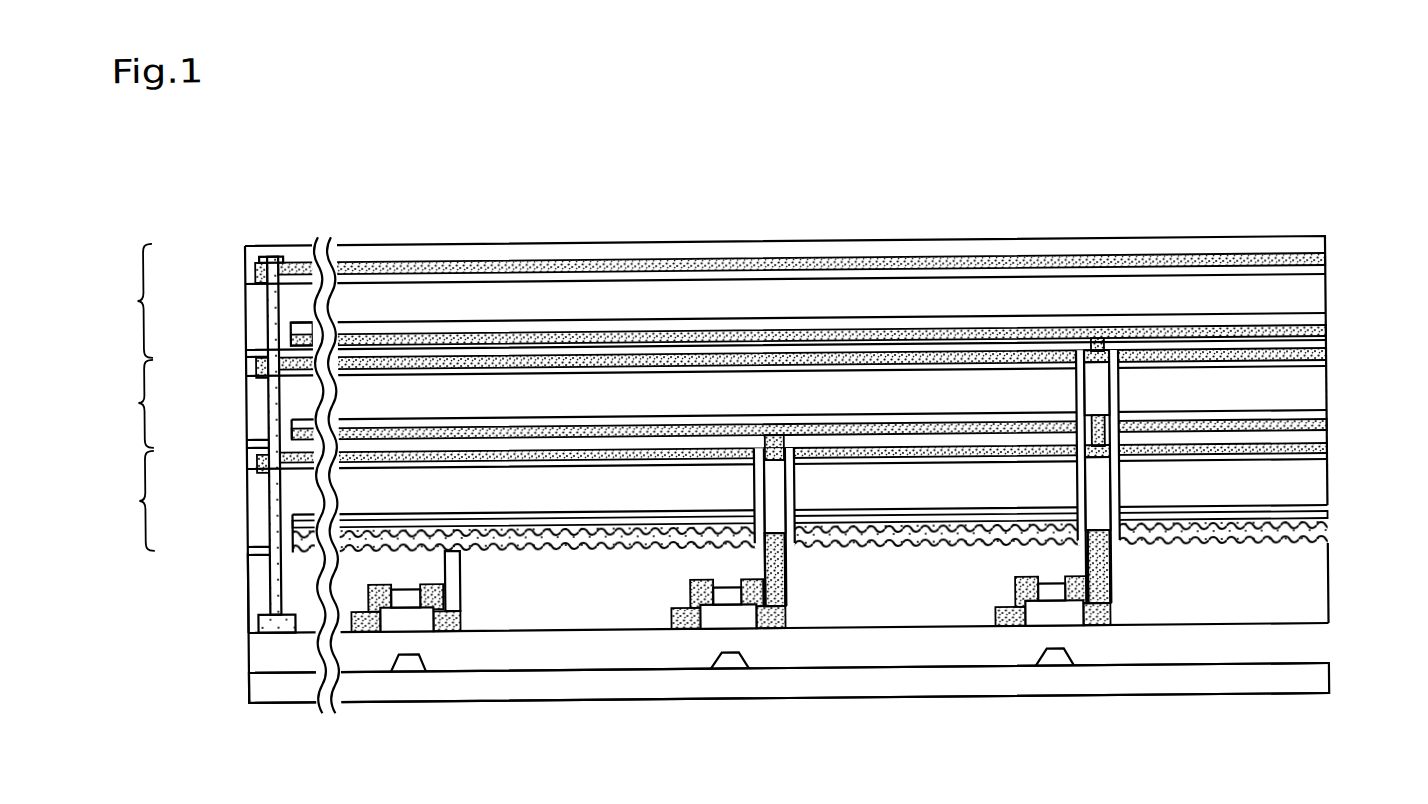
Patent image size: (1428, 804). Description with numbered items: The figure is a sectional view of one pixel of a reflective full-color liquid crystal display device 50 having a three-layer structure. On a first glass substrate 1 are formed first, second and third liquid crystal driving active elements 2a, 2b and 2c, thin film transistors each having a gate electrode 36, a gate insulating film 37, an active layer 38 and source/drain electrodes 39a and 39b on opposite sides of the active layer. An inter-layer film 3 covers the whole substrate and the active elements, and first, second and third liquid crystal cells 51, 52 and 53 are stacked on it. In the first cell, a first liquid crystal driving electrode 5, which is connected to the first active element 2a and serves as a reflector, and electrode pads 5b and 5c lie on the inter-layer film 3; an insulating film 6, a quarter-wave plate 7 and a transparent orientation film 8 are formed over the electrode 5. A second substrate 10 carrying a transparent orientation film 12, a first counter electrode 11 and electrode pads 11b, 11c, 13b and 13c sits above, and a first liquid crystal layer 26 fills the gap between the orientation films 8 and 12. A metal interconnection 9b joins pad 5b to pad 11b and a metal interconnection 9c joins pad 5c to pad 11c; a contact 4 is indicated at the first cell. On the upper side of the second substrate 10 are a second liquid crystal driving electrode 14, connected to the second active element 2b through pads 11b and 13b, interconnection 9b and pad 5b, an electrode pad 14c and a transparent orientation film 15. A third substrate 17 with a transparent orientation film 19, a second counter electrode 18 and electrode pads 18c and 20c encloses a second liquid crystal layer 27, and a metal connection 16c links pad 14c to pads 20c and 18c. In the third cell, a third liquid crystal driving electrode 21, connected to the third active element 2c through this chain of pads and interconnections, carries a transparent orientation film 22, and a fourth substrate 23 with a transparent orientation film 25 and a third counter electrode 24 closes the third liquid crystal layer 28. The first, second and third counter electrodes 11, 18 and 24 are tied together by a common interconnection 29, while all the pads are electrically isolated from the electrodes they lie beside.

The first glass substrate 1 is at (1310, 695).
The first liquid crystal driving active element 2a is at (439, 659).
The second liquid crystal driving active element 2b is at (686, 638).
The third liquid crystal driving active element 2c is at (1027, 690).
The inter-layer film 3 is at (1310, 598).
The contact hole 4 is at (460, 577).
The first liquid crystal driving electrode 5 is at (878, 548).
The electrode pad 5b is at (785, 553).
The electrode pad 5c is at (1112, 553).
The insulating film 6 is at (1325, 545).
The ¼-wave plate 7 is at (1325, 525).
The transparent orientation film 8 is at (1325, 516).
The metal interconnection 9b is at (761, 520).
The metal interconnection 9c is at (1080, 548).
The second substrate 10 is at (246, 447).
The first counter electrode 11 is at (1325, 462).
The electrode pad 11b is at (756, 462).
The electrode pad 11c is at (1118, 474).
The transparent orientation film 12 is at (255, 467).
The electrode pad 13b is at (788, 474).
The electrode pad 13c is at (1076, 476).
The second liquid crystal driving electrode 14 is at (289, 432).
The electrode pad 14c is at (1110, 418).
The transparent orientation film 15 is at (1325, 421).
The metal connection 16c is at (1082, 405).
The third substrate 17 is at (247, 354).
The second counter electrode 18 is at (1325, 363).
The electrode pad 18c is at (1099, 350).
The transparent orientation film 19 is at (1325, 374).
The electrode pad 20c is at (1082, 357).
The third liquid crystal driving electrode 21 is at (1325, 340).
The transparent orientation film 22 is at (288, 331).
The fourth substrate 23 is at (243, 259).
The third counter electrode 24 is at (1325, 268).
The transparent orientation film 25 is at (1325, 278).
The first liquid crystal layer 26 is at (389, 507).
The second liquid crystal layer 27 is at (383, 411).
The third liquid crystal layer 28 is at (383, 316).
The common interconnection 29 is at (266, 579).
The gate electrode 36 is at (1050, 670).
The gate insulating film 37 is at (1310, 650).
The active layer 38 is at (1035, 626).
The source/drain electrode 39a is at (1007, 632).
The source/drain electrode 39b is at (1097, 632).
The liquid crystal display device 50 is at (991, 203).
The first liquid crystal cell 51 is at (128, 501).
The second liquid crystal cell 52 is at (127, 404).
The third liquid crystal cell 53 is at (126, 301).